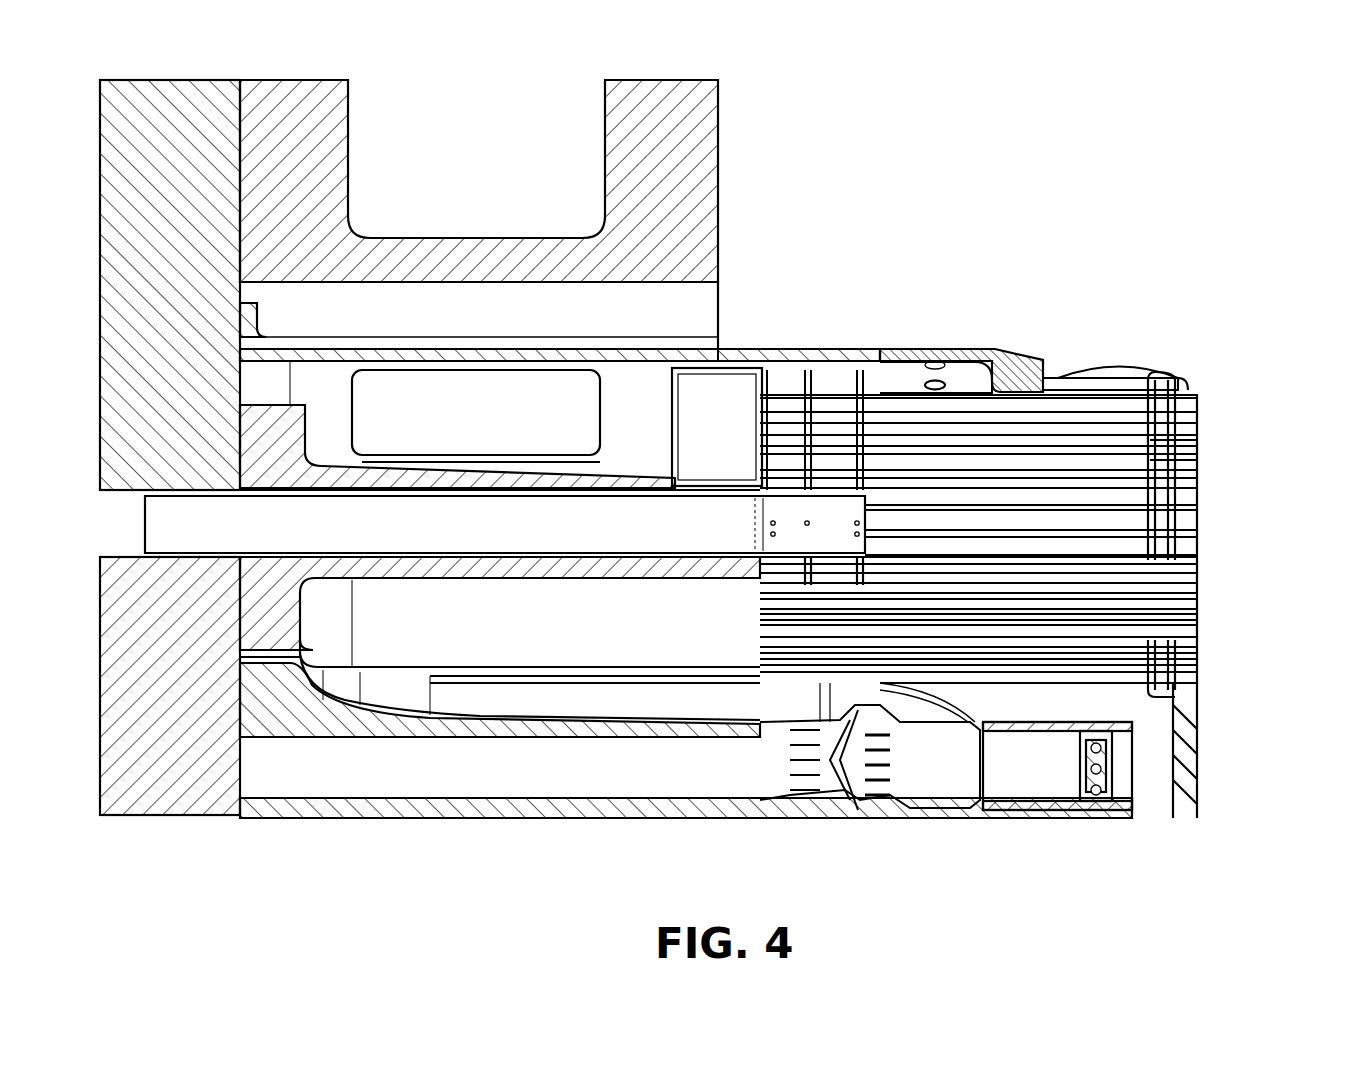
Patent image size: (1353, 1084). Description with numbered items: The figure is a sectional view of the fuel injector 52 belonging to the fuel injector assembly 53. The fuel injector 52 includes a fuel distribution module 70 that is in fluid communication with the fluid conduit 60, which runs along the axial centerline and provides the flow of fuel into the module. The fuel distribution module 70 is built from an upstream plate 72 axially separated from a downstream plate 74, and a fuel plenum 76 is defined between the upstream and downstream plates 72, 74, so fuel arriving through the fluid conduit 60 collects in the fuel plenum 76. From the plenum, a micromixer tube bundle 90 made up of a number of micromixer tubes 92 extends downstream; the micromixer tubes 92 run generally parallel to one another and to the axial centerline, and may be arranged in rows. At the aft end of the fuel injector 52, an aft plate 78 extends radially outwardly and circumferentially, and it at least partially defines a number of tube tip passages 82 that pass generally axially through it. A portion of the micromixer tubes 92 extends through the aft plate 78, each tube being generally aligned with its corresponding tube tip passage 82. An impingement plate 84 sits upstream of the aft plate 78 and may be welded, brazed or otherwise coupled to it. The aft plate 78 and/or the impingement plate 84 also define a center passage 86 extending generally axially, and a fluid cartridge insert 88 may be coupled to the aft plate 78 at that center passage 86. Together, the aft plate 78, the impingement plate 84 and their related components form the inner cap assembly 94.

The fuel injector assembly 53 is at (937, 123).
The fluid conduit 60 is at (417, 537).
The fuel distribution module 70 is at (838, 380).
The upstream plate 72 is at (800, 385).
The downstream plate 74 is at (877, 392).
The fuel plenum 76 is at (842, 380).
The aft plate 78 is at (1198, 403).
The tube tip passages 82 is at (1198, 462).
The impingement plate 84 is at (1150, 388).
The center passage 86 is at (417, 786).
The fluid cartridge insert 88 is at (1150, 790).
The micromixer tube bundle 90 is at (993, 390).
The micromixer tubes 92 is at (935, 385).
The fuel injector 52 is at (1058, 368).
The inner cap assembly 94 is at (1187, 386).